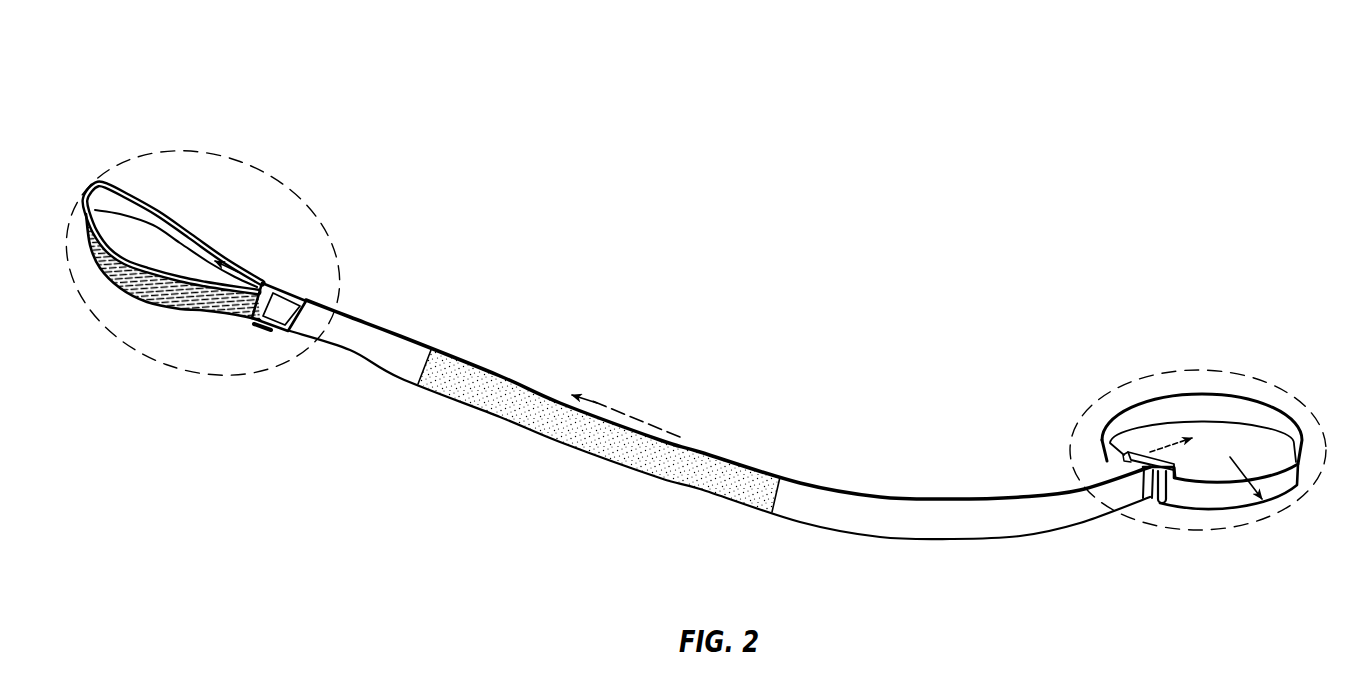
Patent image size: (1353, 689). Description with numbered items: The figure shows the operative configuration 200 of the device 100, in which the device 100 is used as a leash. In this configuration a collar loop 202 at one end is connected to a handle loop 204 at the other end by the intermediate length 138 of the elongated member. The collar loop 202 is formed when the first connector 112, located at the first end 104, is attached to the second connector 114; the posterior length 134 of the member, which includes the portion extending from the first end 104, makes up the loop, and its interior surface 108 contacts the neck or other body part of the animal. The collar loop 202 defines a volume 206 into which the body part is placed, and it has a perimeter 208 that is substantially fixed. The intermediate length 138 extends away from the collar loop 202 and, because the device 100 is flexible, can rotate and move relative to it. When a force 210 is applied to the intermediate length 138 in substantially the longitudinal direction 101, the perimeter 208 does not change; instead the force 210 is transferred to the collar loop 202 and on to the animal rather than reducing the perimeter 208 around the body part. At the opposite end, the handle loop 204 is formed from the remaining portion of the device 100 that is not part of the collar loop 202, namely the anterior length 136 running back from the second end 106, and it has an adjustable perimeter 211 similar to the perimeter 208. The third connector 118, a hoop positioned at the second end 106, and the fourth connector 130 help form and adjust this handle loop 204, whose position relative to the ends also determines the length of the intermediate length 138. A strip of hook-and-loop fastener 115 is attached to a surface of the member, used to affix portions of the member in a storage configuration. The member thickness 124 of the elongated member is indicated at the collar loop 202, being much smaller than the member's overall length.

The device 100 is at (848, 305).
The longitudinal direction 101 is at (240, 270).
The first end 104 is at (1150, 500).
The second end 106 is at (267, 328).
The interior surface 108 is at (1237, 415).
The first connector 112 is at (1120, 463).
The second connector 114 is at (1165, 502).
The strip of hook-and-loop fastener 115 is at (202, 297).
The third connector 118 is at (257, 322).
The member thickness 124 is at (1266, 505).
The fourth connector 130 is at (280, 293).
The posterior length 134 is at (1213, 407).
The anterior length 136 is at (132, 280).
The intermediate length 138 is at (482, 398).
The operative configuration 200 is at (1133, 78).
The collar loop 202 is at (1230, 350).
The handle loop 204 is at (200, 247).
The volume 206 is at (1267, 447).
The perimeter 208 is at (1097, 400).
The force 210 is at (625, 413).
The adjustable perimeter 211 is at (117, 152).